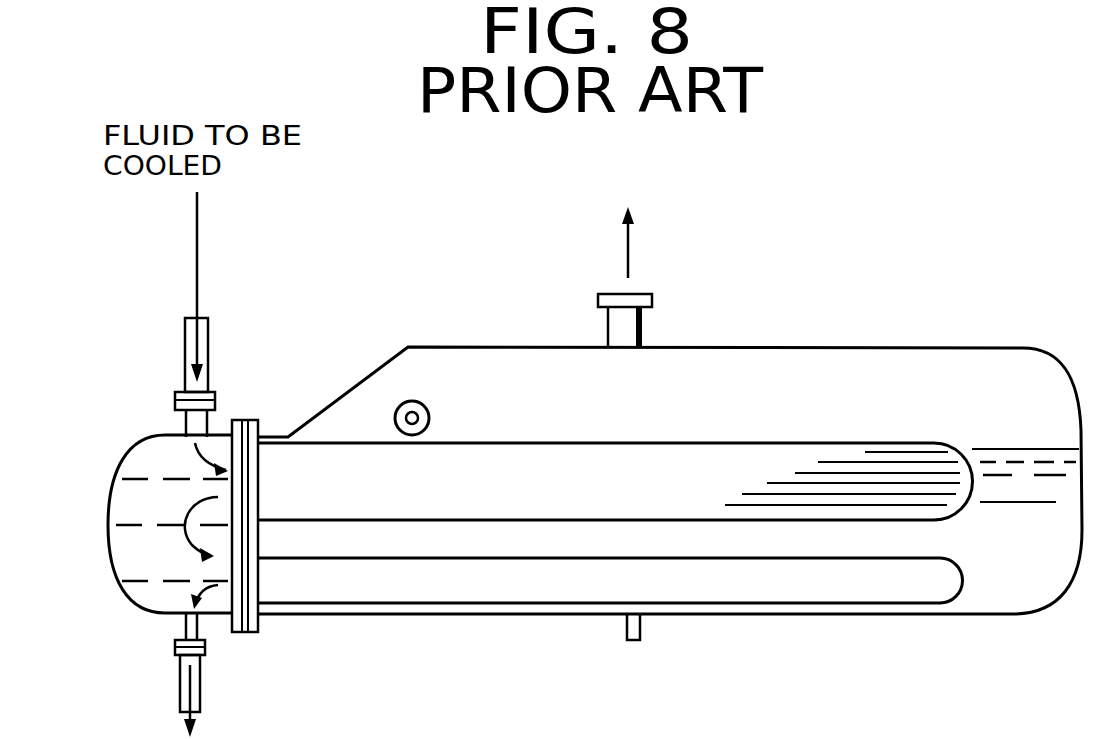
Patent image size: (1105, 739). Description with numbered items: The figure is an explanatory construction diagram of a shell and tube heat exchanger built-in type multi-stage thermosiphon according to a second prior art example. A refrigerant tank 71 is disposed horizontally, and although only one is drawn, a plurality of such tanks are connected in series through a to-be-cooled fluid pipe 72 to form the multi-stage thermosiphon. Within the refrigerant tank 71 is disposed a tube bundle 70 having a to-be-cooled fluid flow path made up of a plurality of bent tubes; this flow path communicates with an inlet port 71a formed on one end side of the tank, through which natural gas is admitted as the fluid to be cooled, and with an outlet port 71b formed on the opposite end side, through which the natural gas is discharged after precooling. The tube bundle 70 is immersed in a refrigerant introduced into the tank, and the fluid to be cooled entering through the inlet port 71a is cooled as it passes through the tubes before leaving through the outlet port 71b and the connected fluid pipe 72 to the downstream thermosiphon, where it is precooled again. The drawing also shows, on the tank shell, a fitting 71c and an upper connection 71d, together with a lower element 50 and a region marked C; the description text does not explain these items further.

The refrigerant tank 71 is at (873, 348).
The inlet port 71a is at (175, 400).
The outlet port 71b is at (175, 643).
The sight glass 71c is at (429, 412).
The vent nozzle 71d is at (642, 330).
The to-be-cooled fluid pipe 72 is at (208, 333).
The tube bundle 70 is at (932, 447).
The cooling tube 50 is at (903, 593).
The coolant C is at (1010, 582).